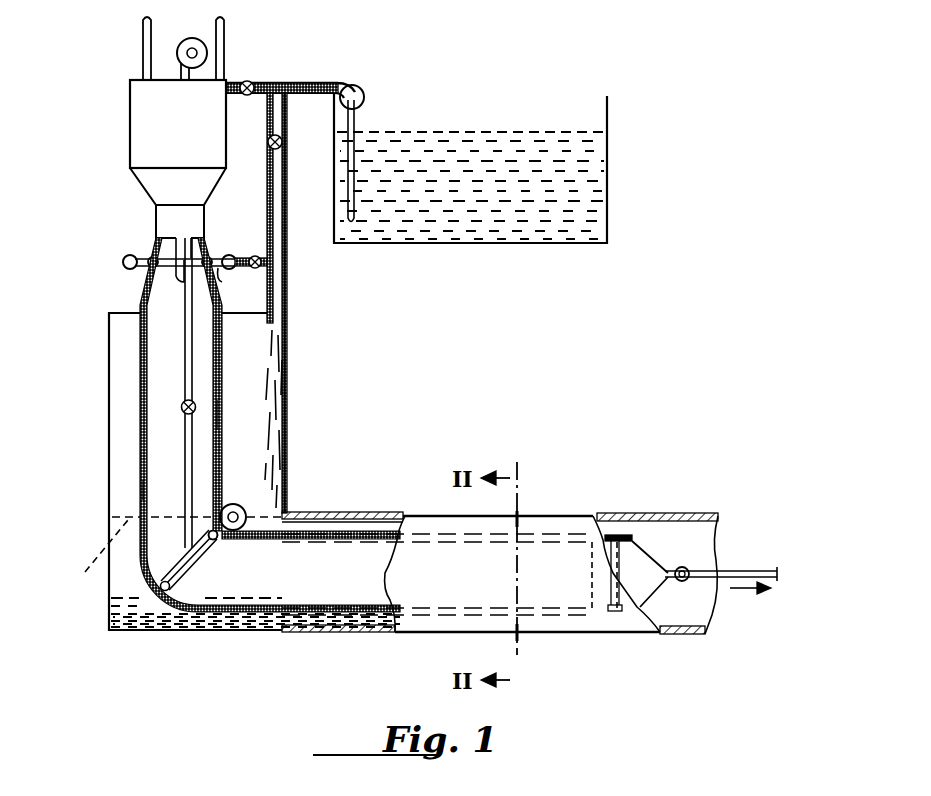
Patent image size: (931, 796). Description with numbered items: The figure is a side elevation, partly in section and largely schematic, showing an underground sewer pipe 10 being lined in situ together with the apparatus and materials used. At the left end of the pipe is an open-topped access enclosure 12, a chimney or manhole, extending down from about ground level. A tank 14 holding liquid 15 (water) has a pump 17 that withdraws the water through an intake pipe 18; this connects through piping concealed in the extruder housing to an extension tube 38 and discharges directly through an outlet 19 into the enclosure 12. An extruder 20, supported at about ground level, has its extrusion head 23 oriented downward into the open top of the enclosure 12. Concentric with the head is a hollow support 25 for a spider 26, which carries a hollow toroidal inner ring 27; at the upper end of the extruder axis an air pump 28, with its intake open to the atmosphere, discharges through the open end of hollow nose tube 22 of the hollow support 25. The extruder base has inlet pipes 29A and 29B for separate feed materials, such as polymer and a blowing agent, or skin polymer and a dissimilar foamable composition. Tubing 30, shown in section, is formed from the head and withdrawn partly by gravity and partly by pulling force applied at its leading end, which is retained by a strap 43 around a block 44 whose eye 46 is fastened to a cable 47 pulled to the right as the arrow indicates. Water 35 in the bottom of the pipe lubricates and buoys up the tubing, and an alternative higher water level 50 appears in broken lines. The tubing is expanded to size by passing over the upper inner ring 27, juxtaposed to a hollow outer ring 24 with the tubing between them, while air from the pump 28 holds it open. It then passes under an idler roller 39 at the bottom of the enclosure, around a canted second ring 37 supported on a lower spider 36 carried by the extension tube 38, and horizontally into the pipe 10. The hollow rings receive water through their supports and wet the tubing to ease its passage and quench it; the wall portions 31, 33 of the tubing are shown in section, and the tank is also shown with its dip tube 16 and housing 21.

The sewer pipe 10 is at (590, 516).
The access enclosure 12 is at (109, 415).
The tank 14 is at (607, 128).
The liquid 15 is at (515, 200).
The dip tube 16 is at (351, 215).
The pump 17 is at (362, 95).
The intake pipe 18 is at (268, 84).
The outlet 19 is at (282, 214).
The extruder 20 is at (130, 155).
The housing 21 is at (155, 124).
The hollow nose tube 22 is at (180, 284).
The extrusion head 23 is at (165, 207).
The hollow outer ring 24 is at (122, 262).
The hollow support 25 is at (178, 256).
The spider 26 is at (150, 268).
The inner ring 27 is at (220, 274).
The air pump 28 is at (197, 40).
The inlet pipe 29A is at (143, 35).
The inlet pipe 29B is at (224, 35).
The tubing 30 is at (140, 467).
The pipe wall 31 is at (144, 485).
The pipe wall 33 is at (217, 415).
The water 35 is at (128, 616).
The spider 36 is at (203, 578).
The second ring 37 is at (215, 546).
The extension tube 38 is at (192, 365).
The idler roller 39 is at (245, 510).
The strap 43 is at (608, 560).
The block 44 is at (660, 590).
The eye 46 is at (683, 567).
The cable 47 is at (742, 573).
The alternative water level 50 is at (175, 551).